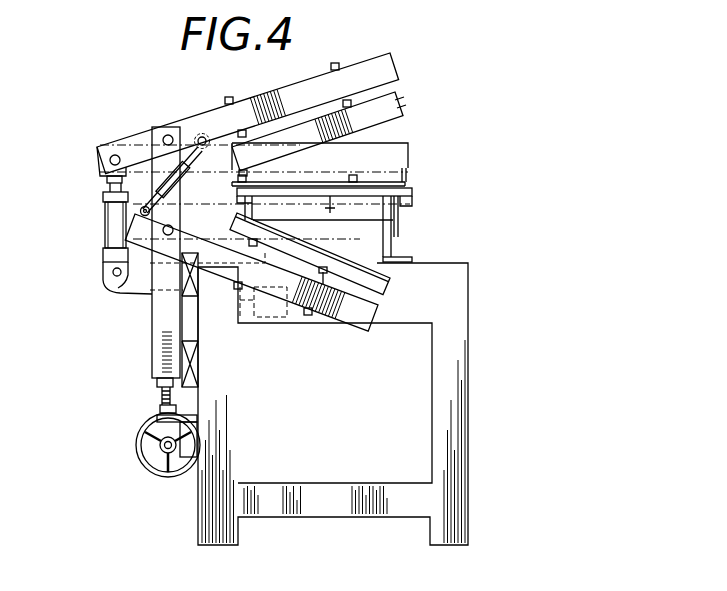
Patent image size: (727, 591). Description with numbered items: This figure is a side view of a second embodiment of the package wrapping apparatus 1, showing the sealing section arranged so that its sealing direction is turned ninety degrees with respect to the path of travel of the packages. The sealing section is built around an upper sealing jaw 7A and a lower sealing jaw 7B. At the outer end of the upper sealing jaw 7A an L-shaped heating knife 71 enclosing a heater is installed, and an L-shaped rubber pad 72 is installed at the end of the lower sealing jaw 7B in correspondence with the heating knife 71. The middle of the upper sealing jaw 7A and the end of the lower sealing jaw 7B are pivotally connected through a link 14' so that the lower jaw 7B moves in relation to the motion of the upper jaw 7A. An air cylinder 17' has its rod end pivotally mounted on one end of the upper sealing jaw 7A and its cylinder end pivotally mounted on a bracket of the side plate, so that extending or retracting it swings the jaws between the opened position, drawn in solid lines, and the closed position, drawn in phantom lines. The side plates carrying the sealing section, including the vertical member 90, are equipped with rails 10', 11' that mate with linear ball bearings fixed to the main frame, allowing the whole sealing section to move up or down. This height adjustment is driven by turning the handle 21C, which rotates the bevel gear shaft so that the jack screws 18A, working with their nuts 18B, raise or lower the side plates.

The work supporting table assembly 1 is at (423, 191).
The upper sealing jaw 7A is at (368, 56).
The lower sealing jaw 7B is at (369, 333).
The L-shaped heating knife 71 is at (410, 98).
The L-shaped rubber pad 72 is at (394, 286).
The connecting link 14' is at (172, 147).
The air cylinder 17' is at (103, 235).
The vertical link member 90 is at (152, 316).
The rail 10' is at (210, 320).
The rail 11' is at (332, 404).
The jack screw 18A is at (152, 366).
The feed nut 18B is at (126, 408).
The handle 21C is at (166, 478).